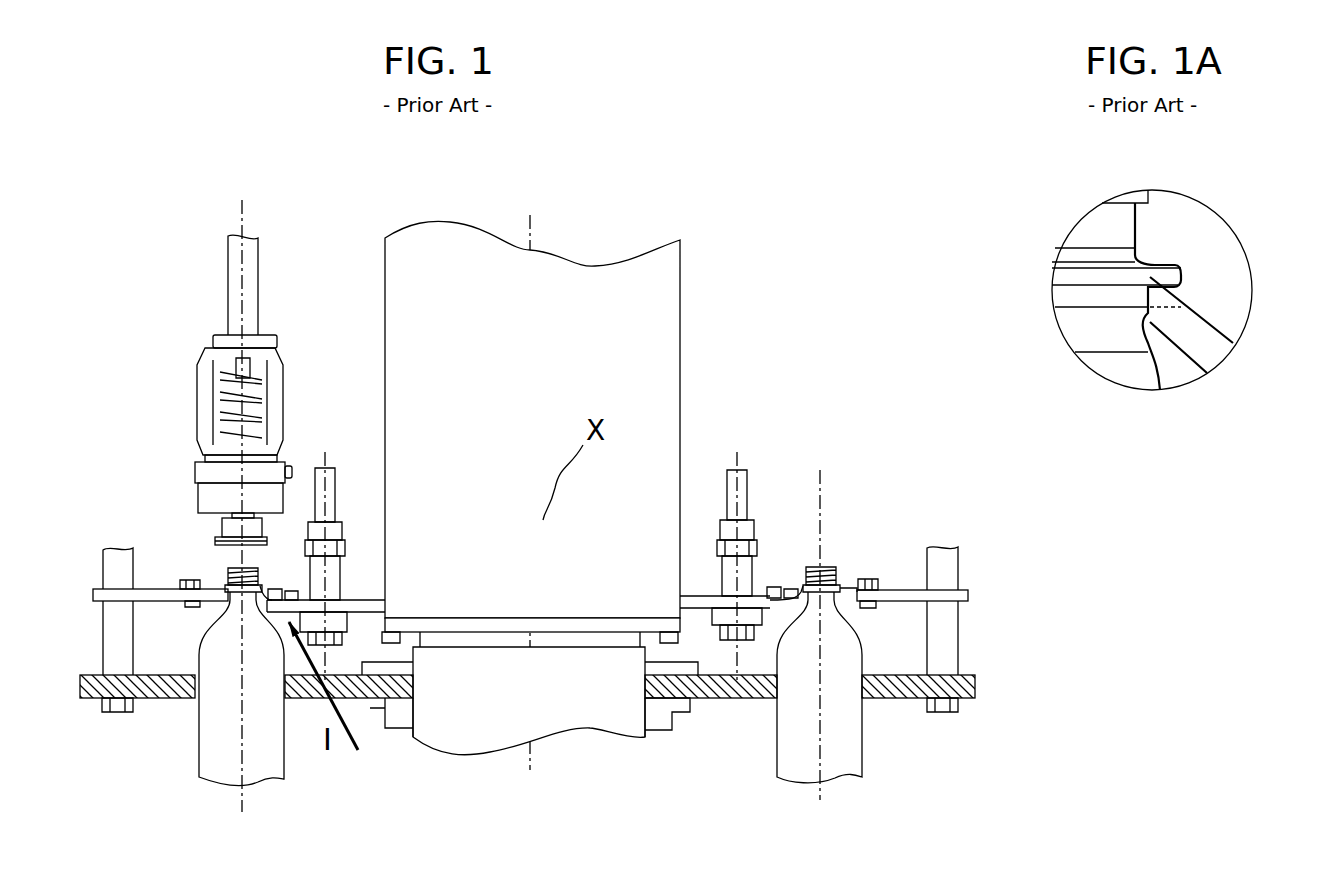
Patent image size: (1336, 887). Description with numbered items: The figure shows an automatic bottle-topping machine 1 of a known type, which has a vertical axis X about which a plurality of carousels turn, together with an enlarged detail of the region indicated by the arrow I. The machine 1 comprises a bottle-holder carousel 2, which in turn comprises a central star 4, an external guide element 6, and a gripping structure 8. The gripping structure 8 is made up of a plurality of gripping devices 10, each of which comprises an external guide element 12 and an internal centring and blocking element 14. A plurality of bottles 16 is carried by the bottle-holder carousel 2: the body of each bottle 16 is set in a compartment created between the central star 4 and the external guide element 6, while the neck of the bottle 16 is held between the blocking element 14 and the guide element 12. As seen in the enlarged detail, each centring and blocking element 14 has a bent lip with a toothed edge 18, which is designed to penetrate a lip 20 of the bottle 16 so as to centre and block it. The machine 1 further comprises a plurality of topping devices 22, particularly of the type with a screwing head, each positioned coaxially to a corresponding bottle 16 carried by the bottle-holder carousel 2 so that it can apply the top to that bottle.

In FIG. 1, the automatic bottle-topping machine 1 is at (599, 206).
In FIG. 1, the bottle-holder carousel 2 is at (970, 623).
In FIG. 1, the central star 4 is at (741, 698).
In FIG. 1, the external guide element 6 is at (975, 686).
In FIG. 1, the gripping structure 8 is at (940, 526).
In FIG. 1, the gripping device 10 is at (263, 571).
In FIG. 1, the external guide element 12 is at (212, 590).
In FIG. 1, the internal centring and blocking element 14 is at (272, 592).
In FIG. 1A, the internal centring and blocking element 14 is at (1186, 345).
In FIG. 1, the bottle 16 is at (218, 744).
In FIG. 1A, the bottle 16 is at (1088, 322).
In FIG. 1A, the toothed edge 18 is at (1178, 294).
In FIG. 1A, the lip 20 is at (1153, 263).
In FIG. 1, the topping device 22 is at (215, 324).